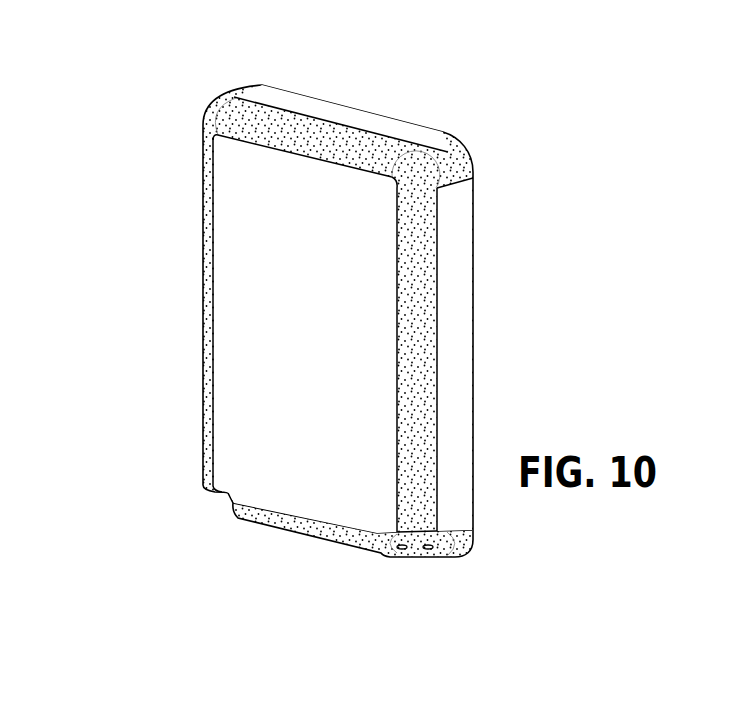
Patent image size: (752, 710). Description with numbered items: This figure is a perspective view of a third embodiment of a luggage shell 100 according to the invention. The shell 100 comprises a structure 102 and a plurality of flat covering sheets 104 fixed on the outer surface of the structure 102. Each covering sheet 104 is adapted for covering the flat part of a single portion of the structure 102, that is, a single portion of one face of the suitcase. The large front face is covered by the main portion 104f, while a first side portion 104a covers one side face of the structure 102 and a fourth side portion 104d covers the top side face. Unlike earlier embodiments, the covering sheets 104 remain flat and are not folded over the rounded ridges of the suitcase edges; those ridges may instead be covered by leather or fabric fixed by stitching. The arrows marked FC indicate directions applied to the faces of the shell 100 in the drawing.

The luggage shell 100 is at (523, 125).
The structure 102 is at (447, 148).
The covering sheet 104 is at (290, 103).
The first side portion 104a is at (453, 322).
The fourth side portion 104d is at (372, 122).
The main portion 104f is at (247, 397).
The force direction FC is at (337, 112).